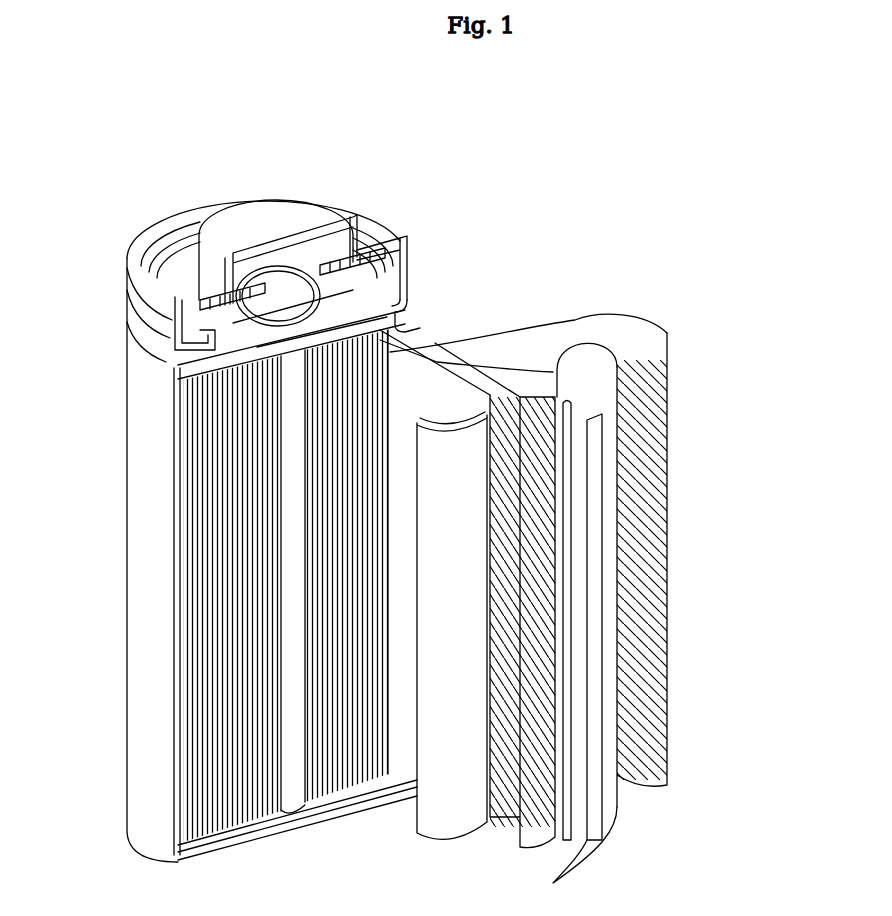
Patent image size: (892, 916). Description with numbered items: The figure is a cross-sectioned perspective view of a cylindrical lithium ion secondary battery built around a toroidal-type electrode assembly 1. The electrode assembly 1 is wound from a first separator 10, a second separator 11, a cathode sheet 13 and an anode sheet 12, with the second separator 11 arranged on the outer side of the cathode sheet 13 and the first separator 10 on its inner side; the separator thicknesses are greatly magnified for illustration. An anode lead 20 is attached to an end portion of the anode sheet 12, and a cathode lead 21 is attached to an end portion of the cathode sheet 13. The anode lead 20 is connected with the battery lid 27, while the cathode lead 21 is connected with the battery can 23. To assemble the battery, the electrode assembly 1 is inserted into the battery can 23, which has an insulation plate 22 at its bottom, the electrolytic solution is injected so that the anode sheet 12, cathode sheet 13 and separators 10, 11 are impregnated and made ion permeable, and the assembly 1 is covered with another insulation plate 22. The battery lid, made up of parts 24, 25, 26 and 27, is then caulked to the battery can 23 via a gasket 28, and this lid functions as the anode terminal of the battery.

The toroidal-type electrode assembly 1 is at (594, 609).
The first separator 10 is at (540, 577).
The second separator 11 is at (655, 435).
The anode sheet 12 is at (467, 626).
The cathode sheet 13 is at (600, 478).
The anode lead 20 is at (234, 256).
The cathode lead 21 is at (573, 877).
The insulation plate 22 is at (185, 372).
The battery can 23 is at (127, 548).
The battery lid component 24 is at (300, 300).
The battery lid component 25 is at (318, 252).
The battery lid component 26 is at (355, 220).
The battery lid 27 is at (233, 215).
The gasket 28 is at (172, 302).